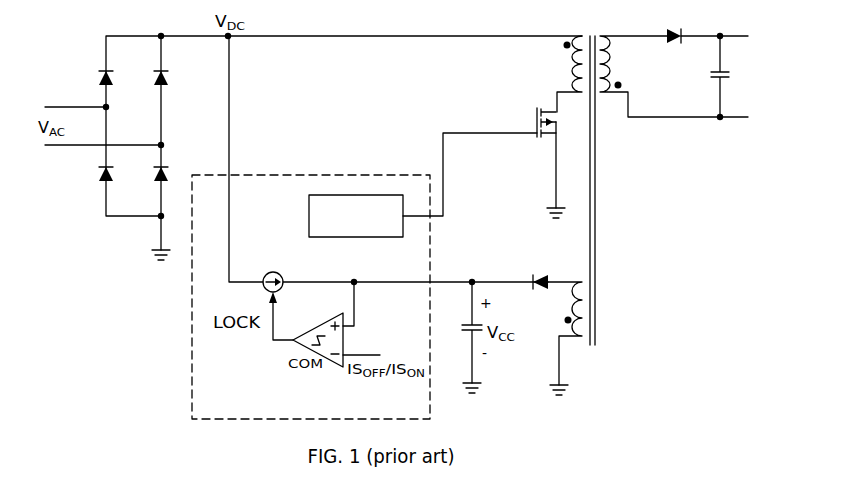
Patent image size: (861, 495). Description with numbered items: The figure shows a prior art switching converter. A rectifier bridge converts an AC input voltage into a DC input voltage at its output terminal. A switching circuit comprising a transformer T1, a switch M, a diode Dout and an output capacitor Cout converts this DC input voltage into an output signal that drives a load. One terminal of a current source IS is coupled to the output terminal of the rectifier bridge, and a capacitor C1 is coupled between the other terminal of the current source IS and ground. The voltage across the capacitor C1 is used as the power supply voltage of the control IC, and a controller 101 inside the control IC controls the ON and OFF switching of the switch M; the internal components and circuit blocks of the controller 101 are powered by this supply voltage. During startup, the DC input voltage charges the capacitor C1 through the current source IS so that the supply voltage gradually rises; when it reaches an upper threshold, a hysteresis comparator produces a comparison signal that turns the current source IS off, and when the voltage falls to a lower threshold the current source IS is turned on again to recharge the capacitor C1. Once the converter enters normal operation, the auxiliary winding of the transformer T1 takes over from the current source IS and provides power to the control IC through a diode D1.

The controller 101 is at (309, 221).
The control IC is at (311, 297).
The current source IS is at (274, 273).
The capacitor C1 is at (460, 332).
The diode D1 is at (538, 272).
The transformer T1 is at (648, 200).
The switch M is at (558, 158).
The diode Dout is at (691, 29).
The output capacitor Cout is at (703, 76).